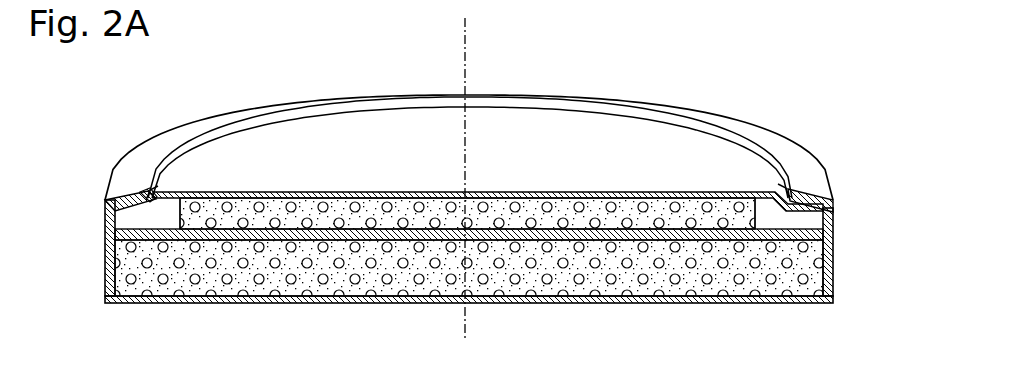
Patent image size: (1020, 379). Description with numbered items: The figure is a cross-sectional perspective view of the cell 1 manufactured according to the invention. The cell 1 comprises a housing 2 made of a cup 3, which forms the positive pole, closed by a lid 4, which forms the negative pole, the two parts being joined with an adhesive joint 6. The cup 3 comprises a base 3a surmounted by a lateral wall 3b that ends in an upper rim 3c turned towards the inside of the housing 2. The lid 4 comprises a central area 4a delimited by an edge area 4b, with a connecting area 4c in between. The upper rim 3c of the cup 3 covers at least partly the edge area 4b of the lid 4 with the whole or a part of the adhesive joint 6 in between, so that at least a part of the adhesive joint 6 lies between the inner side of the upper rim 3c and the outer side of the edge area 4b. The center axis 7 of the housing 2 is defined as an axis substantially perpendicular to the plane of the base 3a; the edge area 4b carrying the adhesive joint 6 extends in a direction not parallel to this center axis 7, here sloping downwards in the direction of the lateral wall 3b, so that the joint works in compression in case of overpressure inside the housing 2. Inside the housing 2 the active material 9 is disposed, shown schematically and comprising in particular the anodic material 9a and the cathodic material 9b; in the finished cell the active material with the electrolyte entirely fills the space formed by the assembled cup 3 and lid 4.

The cell 1 is at (795, 65).
The housing 2 is at (70, 162).
The cup 3 is at (503, 239).
The base 3a is at (757, 302).
The lateral wall 3b is at (837, 253).
The upper rim 3c is at (812, 197).
The lid 4 is at (469, 195).
The central area 4a is at (370, 140).
The edge area 4b is at (153, 204).
The connecting area 4c is at (152, 197).
The adhesive joint 6 is at (148, 198).
The center axis 7 is at (468, 65).
The active material 9 is at (469, 275).
The anodic material 9a is at (412, 240).
The cathodic material 9b is at (344, 268).